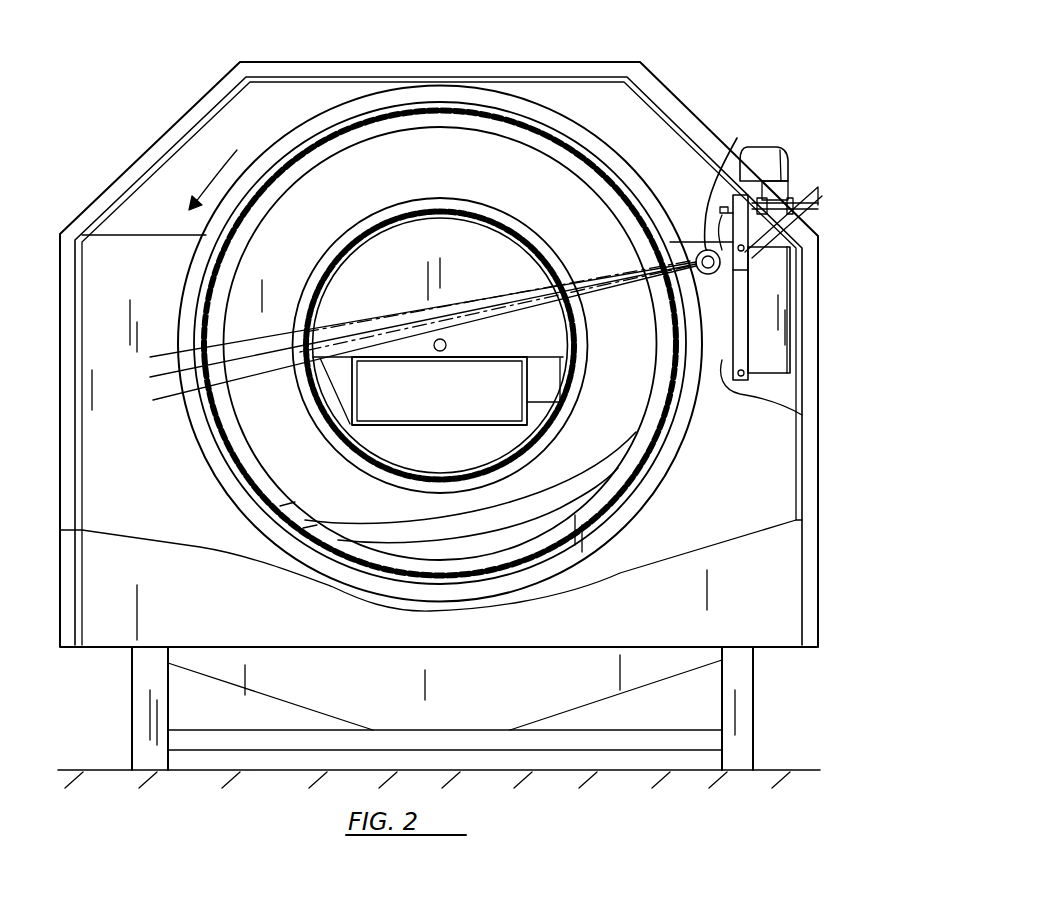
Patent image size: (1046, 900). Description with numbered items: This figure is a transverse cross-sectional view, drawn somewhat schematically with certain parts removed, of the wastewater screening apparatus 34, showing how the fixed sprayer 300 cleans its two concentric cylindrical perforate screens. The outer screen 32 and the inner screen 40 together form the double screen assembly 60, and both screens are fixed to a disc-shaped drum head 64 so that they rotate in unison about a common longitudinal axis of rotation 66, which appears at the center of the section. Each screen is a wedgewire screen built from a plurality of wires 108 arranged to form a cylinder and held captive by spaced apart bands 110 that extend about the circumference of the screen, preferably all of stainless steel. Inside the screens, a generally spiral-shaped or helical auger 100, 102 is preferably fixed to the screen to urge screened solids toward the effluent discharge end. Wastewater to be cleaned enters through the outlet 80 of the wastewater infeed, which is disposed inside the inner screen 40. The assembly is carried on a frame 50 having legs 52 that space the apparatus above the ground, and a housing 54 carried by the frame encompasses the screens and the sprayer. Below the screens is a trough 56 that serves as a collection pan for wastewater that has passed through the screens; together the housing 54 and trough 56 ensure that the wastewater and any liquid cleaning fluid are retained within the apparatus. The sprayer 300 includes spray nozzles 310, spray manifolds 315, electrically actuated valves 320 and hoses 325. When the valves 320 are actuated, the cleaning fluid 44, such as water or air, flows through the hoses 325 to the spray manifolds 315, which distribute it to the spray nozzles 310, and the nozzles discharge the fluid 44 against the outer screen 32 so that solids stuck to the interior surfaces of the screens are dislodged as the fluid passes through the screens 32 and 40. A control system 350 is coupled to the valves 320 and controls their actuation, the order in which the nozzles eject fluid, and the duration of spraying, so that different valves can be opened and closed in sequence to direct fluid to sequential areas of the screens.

The outer screen 32 is at (592, 150).
The wastewater screening apparatus 34 is at (525, 120).
The inner screen 40 is at (465, 200).
The fluid 44 is at (585, 294).
The frame 50 is at (132, 663).
The legs 52 is at (753, 708).
The housing 54 is at (695, 113).
The trough 56 is at (586, 679).
The double screen assembly 60 is at (320, 113).
The drum head 64 is at (632, 385).
The longitudinal axis of rotation 66 is at (443, 340).
The outlet 80 is at (556, 400).
The helical auger 100 is at (580, 513).
The helical auger 102 is at (440, 519).
The wires 108 is at (388, 212).
The bands 110 is at (357, 222).
The sprayer 300 is at (793, 153).
The spray nozzles 310 is at (690, 243).
The spray manifolds 315 is at (737, 180).
The electrically actuated valves 320 is at (780, 136).
The hoses 325 is at (813, 182).
The control system 350 is at (777, 357).